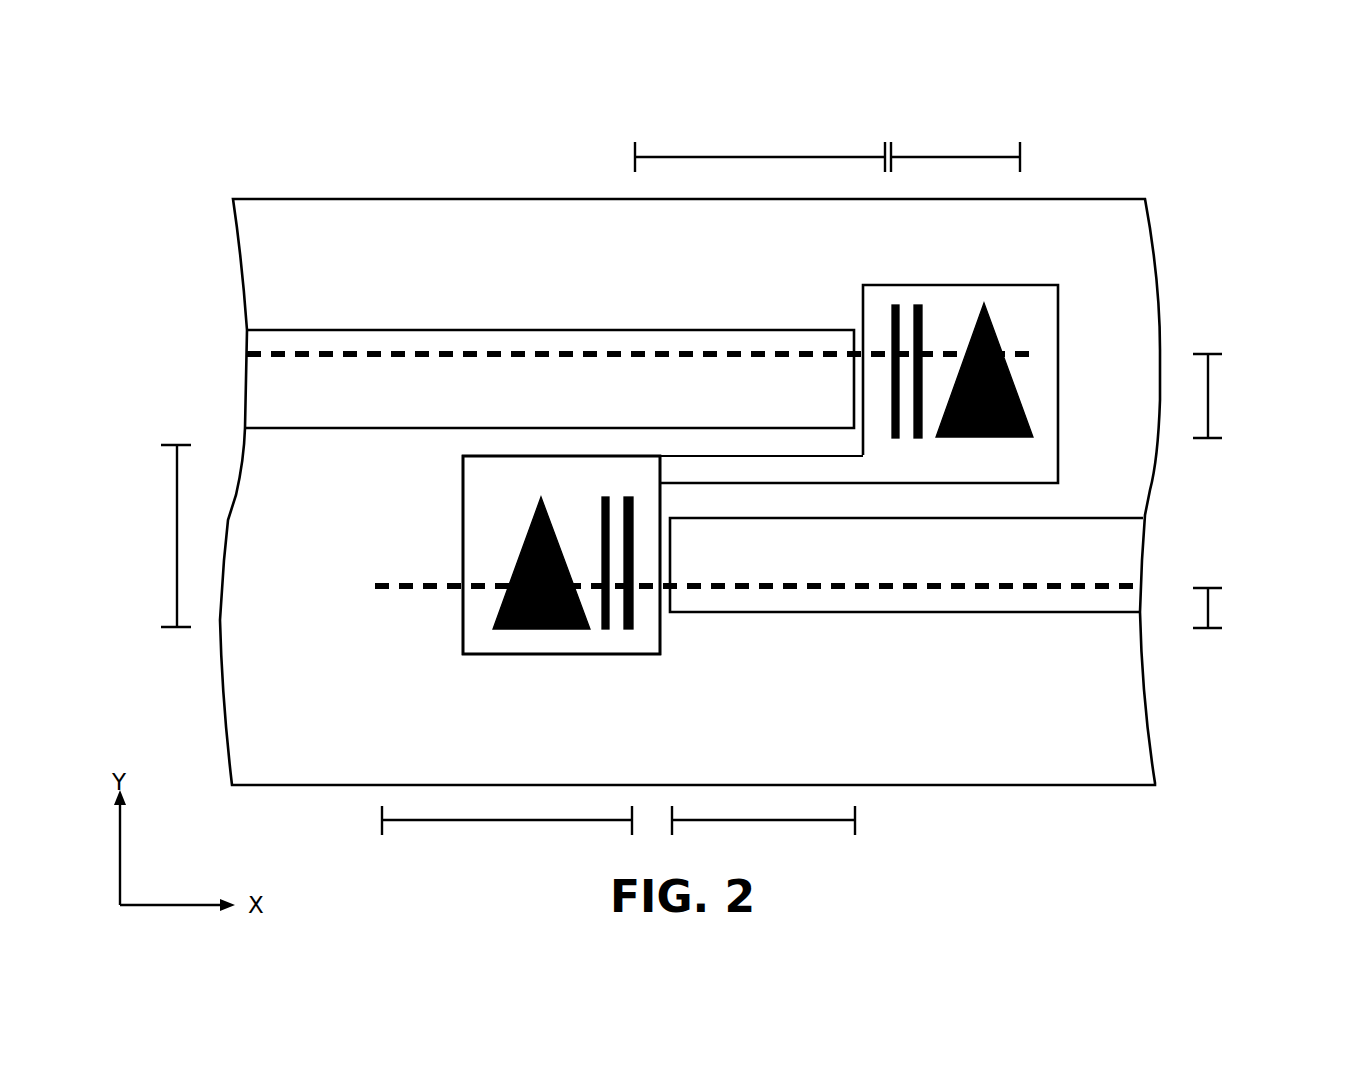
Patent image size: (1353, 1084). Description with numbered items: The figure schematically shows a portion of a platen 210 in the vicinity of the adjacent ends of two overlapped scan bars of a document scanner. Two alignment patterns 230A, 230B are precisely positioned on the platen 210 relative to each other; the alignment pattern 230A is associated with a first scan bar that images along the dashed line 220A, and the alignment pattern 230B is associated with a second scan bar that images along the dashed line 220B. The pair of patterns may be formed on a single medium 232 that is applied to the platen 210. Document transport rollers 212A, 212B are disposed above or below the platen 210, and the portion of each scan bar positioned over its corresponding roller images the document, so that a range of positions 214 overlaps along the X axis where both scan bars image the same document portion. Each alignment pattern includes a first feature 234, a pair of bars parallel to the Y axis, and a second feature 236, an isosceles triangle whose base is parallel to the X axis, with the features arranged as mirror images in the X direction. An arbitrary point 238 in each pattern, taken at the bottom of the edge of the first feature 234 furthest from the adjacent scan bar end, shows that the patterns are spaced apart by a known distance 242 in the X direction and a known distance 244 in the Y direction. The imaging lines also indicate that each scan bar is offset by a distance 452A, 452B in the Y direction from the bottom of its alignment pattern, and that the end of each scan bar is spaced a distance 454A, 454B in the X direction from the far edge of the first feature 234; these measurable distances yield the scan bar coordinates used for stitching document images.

The platen 210 is at (283, 199).
The roller 212A is at (1025, 612).
The roller 212B is at (375, 330).
The range of positions 214 is at (740, 820).
The dashed line 220A is at (762, 592).
The dashed line 220B is at (705, 354).
The alignment pattern 230A is at (439, 563).
The alignment pattern 230B is at (1010, 270).
The single medium 232 is at (487, 654).
The first feature 234 is at (918, 305).
The second feature 236 is at (1010, 385).
The arbitrary point 238 is at (890, 445).
The distance 242 is at (777, 157).
The distance 244 is at (177, 530).
The distance 452A is at (1208, 600).
The distance 452B is at (1208, 400).
The distance 454A is at (447, 820).
The distance 454B is at (1000, 157).